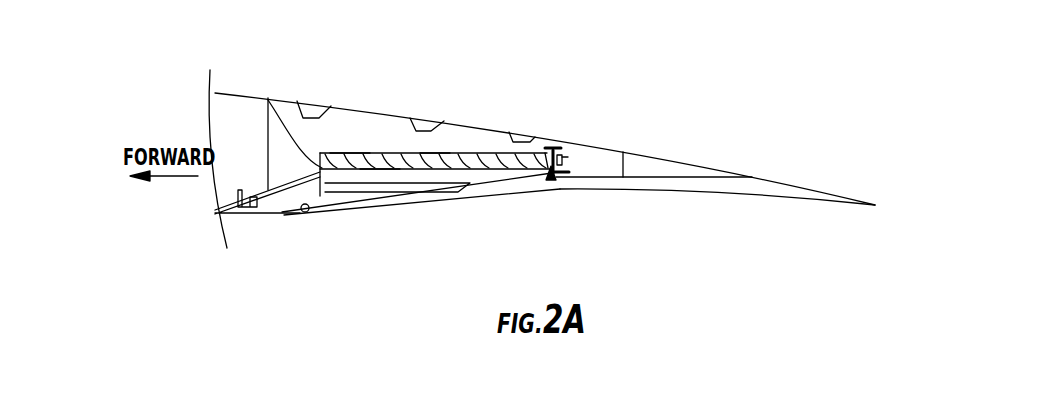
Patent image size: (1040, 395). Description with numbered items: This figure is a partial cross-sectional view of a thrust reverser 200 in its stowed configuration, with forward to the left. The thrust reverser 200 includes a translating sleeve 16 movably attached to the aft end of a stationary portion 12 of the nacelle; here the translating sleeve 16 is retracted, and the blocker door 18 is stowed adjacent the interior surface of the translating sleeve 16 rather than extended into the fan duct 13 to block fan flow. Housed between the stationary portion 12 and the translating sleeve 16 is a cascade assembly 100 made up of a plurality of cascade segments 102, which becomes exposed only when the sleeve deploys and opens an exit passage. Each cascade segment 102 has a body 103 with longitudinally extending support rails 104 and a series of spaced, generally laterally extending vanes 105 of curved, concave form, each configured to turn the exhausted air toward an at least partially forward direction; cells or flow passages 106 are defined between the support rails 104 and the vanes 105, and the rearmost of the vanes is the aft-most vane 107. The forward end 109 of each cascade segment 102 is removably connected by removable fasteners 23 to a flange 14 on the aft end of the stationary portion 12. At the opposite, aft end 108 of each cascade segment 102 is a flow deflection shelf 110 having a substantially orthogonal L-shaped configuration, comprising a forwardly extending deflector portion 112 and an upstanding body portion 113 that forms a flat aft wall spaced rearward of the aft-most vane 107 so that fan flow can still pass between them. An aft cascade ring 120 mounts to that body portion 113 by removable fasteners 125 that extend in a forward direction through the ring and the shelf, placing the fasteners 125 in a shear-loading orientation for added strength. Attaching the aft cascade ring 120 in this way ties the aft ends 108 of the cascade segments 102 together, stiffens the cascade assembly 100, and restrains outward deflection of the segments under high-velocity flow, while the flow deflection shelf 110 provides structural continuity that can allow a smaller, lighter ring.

The stationary portion 12 is at (247, 160).
The fan duct 13 is at (342, 268).
The flange 14 is at (320, 205).
The translating sleeve 16 is at (717, 170).
The blocker door 18 is at (404, 193).
The removable fastener 23 is at (322, 212).
The cascade assembly 100 is at (461, 134).
The cascade segment 102 is at (402, 144).
The body 103 is at (322, 144).
The support rail 104 is at (348, 153).
The vane 105 is at (441, 153).
The cell 106 is at (374, 170).
The aft-most vane 107 is at (544, 155).
The aft end 108 is at (551, 182).
The forward end 109 is at (322, 150).
The flow deflection shelf 110 is at (552, 168).
The deflector portion 112 is at (548, 144).
The body portion 113 is at (554, 174).
The aft cascade ring 120 is at (560, 145).
The removable fastener 125 is at (567, 157).
The thrust reverser 200 is at (722, 95).